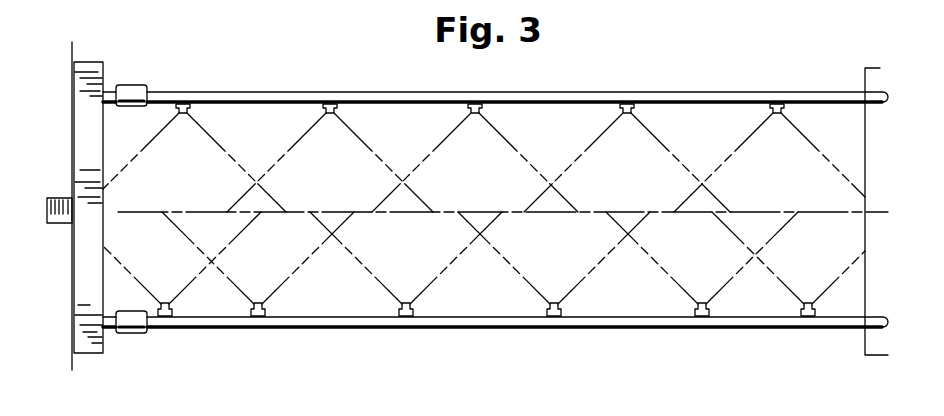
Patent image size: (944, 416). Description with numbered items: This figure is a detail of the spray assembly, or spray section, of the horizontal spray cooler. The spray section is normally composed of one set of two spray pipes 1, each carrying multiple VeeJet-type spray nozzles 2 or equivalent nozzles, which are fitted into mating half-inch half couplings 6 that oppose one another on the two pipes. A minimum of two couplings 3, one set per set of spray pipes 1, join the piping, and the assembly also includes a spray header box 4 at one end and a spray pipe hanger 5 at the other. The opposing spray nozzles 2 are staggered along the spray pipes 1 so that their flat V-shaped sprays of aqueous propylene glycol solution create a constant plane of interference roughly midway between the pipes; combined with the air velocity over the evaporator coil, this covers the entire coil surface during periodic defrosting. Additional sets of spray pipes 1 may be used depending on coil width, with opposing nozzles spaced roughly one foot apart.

The spray pipes 1 is at (380, 90).
The spray nozzles 2 is at (186, 96).
The couplings 3 is at (135, 85).
The spray header box 4 is at (74, 312).
The spray pipe hanger 5 is at (866, 357).
The half couplings 6 is at (190, 97).